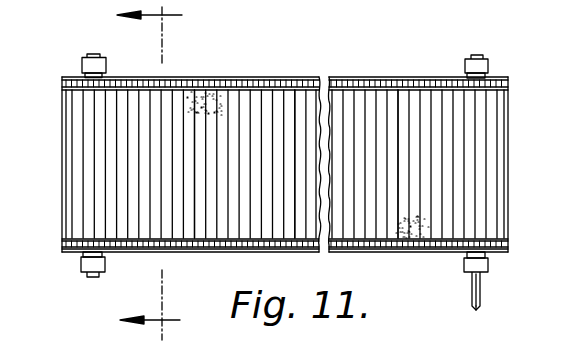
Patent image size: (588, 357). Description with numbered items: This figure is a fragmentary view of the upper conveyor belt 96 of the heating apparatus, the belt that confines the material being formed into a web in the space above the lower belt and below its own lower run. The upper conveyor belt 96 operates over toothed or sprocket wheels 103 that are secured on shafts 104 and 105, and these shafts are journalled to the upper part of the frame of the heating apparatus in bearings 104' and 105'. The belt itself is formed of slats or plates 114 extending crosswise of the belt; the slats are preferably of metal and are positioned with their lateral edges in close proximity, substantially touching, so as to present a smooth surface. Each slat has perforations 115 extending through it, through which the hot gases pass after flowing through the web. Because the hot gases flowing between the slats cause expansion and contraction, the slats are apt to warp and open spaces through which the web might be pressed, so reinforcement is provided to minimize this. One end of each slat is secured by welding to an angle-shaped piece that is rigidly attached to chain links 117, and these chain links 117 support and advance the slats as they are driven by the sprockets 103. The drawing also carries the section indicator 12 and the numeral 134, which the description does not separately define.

The upper conveyor belt 96 is at (505, 160).
The toothed or sprocket wheels 103 is at (75, 78).
The shaft 104 is at (107, 279).
The bearing 104' is at (110, 48).
The shaft 105 is at (464, 307).
The bearing 105' is at (460, 45).
The slats or plates 114 is at (347, 96).
The perforations 115 is at (218, 95).
The chain links 117 is at (405, 78).
The shaft end 134 is at (540, 356).
The section line 12- 12 is at (165, 178).